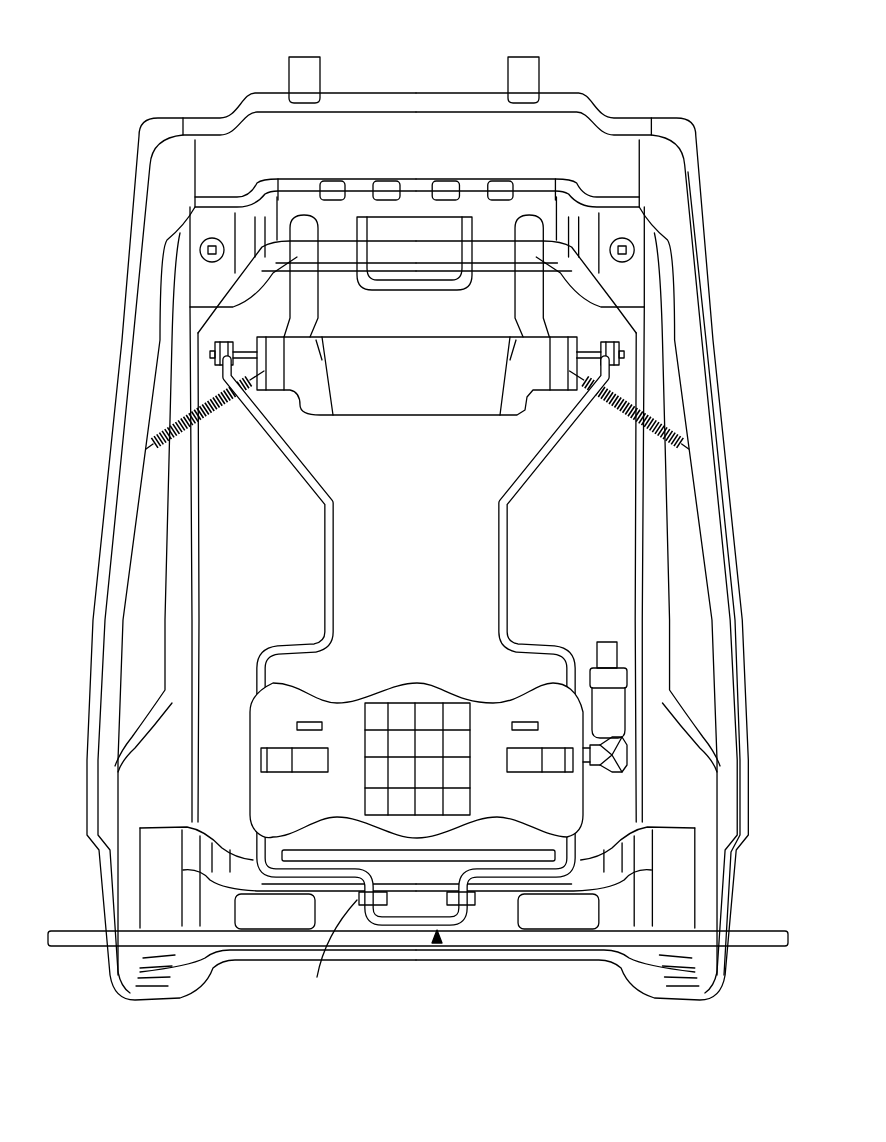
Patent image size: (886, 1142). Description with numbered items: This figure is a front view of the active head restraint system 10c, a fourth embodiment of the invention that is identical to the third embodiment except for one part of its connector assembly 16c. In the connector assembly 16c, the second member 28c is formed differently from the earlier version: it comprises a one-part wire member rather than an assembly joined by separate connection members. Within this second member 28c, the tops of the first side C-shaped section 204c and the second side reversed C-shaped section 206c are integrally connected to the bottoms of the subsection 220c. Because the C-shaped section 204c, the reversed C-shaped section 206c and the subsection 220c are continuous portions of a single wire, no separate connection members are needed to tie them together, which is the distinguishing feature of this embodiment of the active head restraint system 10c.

The active head restraint system 10c is at (84, 103).
The connector assembly 16c is at (527, 487).
The second member 28c is at (320, 558).
The subsection 220c is at (320, 522).
The first side C-shaped section 204c is at (262, 681).
The second side reversed C-shaped section 206c is at (582, 655).